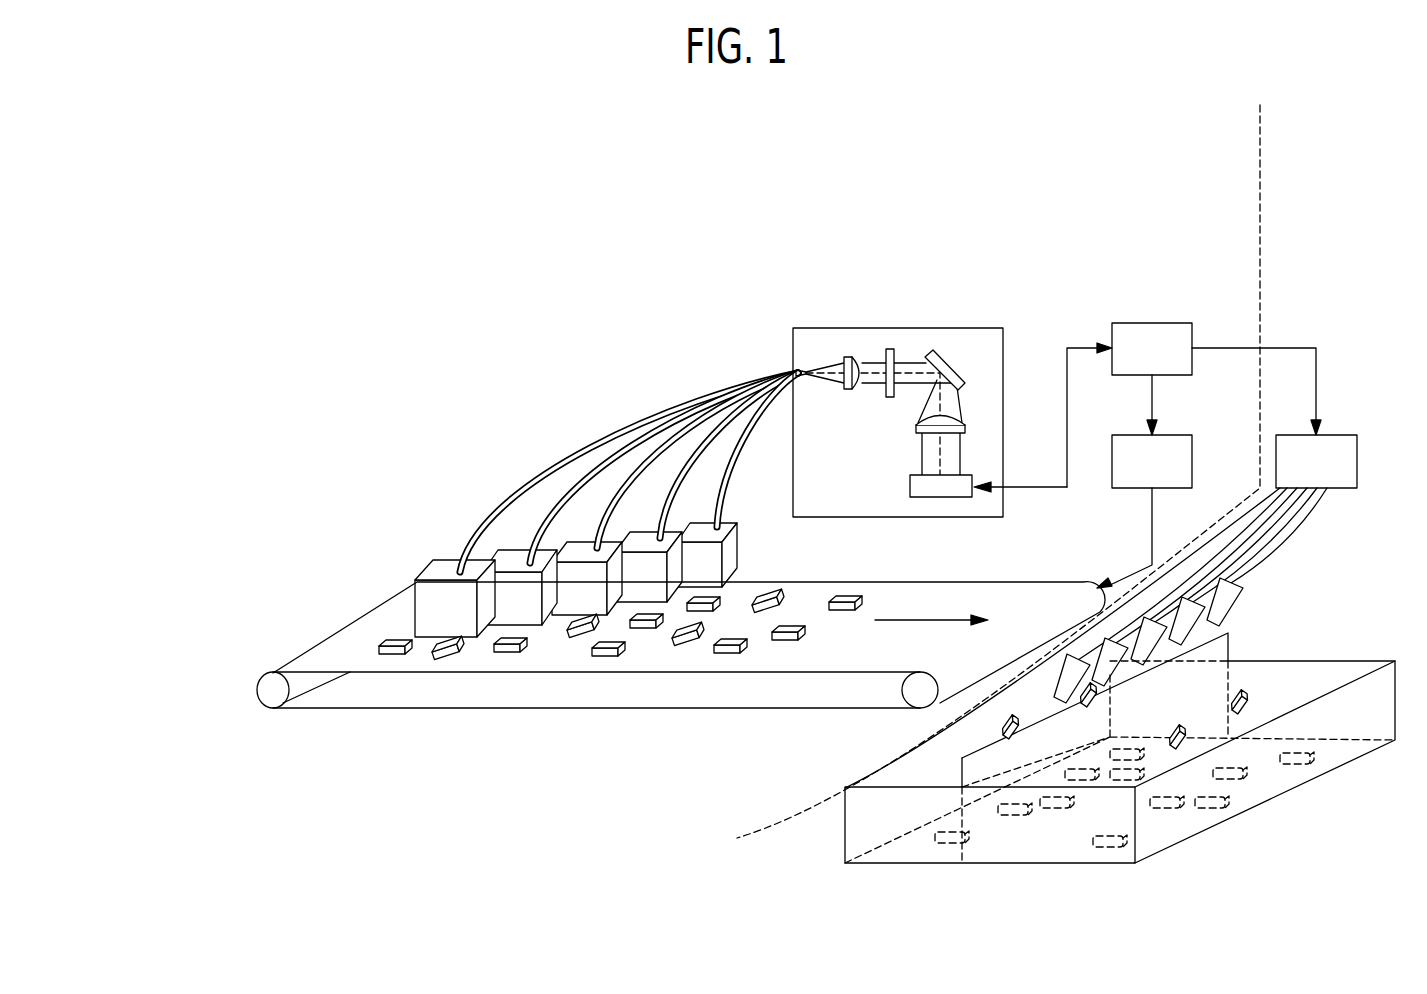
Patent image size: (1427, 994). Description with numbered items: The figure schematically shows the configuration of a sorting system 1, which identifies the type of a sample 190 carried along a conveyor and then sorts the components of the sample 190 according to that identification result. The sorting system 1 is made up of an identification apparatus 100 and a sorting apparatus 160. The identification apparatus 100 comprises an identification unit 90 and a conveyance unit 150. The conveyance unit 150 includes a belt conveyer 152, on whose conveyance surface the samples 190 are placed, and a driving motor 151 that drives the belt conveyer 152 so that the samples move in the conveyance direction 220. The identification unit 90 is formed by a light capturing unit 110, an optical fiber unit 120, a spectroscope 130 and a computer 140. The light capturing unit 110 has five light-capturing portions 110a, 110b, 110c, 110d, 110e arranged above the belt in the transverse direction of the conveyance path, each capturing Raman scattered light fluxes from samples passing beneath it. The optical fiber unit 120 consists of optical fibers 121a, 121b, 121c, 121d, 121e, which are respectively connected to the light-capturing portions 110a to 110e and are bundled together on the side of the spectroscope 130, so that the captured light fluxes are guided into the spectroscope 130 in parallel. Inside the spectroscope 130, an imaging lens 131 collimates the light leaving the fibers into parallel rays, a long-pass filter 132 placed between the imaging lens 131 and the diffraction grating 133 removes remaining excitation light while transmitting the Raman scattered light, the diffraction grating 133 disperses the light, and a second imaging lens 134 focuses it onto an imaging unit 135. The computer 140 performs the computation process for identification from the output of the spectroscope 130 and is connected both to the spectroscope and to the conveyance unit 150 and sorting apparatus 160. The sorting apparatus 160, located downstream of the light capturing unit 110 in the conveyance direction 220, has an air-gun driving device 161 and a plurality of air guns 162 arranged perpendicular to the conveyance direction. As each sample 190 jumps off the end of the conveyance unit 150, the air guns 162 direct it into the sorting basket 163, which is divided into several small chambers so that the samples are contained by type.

The sorting system 1 is at (340, 178).
The identification unit 90 is at (1240, 226).
The identification apparatus 100 is at (188, 523).
The light capturing unit 110 is at (768, 798).
The light-capturing portion 110a is at (452, 625).
The light-capturing portion 110b is at (515, 613).
The light-capturing portion 110c is at (583, 600).
The light-capturing portion 110d is at (642, 590).
The light-capturing portion 110e is at (692, 575).
The optical fiber unit 120 is at (655, 270).
The optical fiber 121a is at (520, 458).
The optical fiber 121b is at (587, 470).
The optical fiber 121c is at (635, 462).
The optical fiber 121d is at (690, 450).
The optical fiber 121e is at (737, 440).
The spectroscope 130 is at (818, 328).
The imaging lens 131 is at (849, 392).
The long-pass filter 132 is at (890, 349).
The diffraction grating 133 is at (947, 358).
The imaging lens 134 is at (967, 426).
The imaging unit 135 is at (943, 498).
The computer 140 is at (1208, 300).
The conveyance unit 150 is at (260, 610).
The driving motor 151 is at (1138, 489).
The belt conveyer 152 is at (1037, 567).
The sorting apparatus 160 is at (1426, 205).
The air-gun driving device 161 is at (1345, 435).
The air guns 162 is at (1332, 508).
The sorting basket 163 is at (883, 866).
The sample 190 is at (787, 640).
The conveyance direction 220 is at (922, 623).